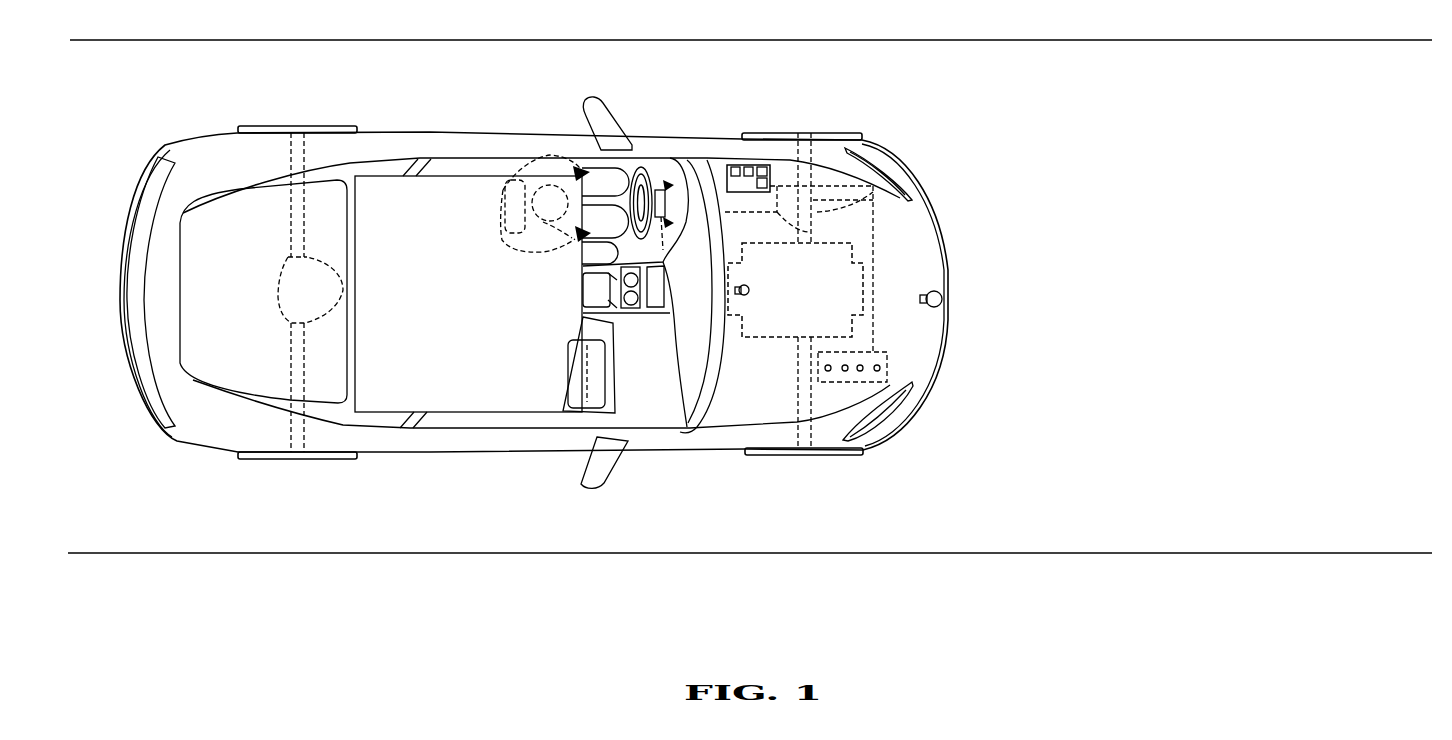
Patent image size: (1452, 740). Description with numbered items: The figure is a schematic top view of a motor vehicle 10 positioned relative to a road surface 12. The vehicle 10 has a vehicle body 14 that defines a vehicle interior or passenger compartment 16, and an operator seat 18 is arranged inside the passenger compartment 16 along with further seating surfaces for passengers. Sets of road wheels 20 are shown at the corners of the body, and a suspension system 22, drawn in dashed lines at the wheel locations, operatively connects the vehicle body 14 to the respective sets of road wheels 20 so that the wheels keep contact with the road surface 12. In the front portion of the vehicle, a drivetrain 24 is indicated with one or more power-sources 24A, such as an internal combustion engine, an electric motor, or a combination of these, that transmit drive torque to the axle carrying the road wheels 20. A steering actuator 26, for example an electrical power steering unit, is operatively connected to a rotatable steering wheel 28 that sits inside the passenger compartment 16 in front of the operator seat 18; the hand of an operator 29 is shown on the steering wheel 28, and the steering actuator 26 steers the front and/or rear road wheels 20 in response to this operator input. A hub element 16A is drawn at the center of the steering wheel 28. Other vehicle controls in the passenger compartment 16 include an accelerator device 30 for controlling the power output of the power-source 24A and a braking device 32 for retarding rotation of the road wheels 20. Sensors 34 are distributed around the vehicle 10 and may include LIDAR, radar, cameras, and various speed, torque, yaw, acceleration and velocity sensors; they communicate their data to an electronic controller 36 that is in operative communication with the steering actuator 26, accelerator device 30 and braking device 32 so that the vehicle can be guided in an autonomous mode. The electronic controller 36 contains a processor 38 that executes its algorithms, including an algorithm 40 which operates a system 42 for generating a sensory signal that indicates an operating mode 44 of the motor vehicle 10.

The motor vehicle 10 is at (438, 106).
The road surface 12 is at (1285, 84).
The vehicle body 14 is at (380, 126).
The passenger compartment 16 is at (486, 204).
The airbag hub 16A is at (668, 180).
The operator seat 18 is at (513, 250).
The road wheels 20 is at (277, 126).
The suspension system 22 is at (309, 433).
The drivetrain 24 is at (860, 326).
The power-source 24A is at (821, 301).
The steering actuator 26 is at (908, 173).
The steering wheel 28 is at (640, 166).
The operator 29 is at (585, 190).
The accelerator device 30 is at (633, 300).
The braking device 32 is at (659, 175).
The sensors 34 is at (942, 300).
The electronic controller 36 is at (770, 168).
The processor 38 is at (734, 165).
The algorithm 40 is at (748, 165).
The system 42 is at (763, 165).
The operating mode 44 is at (812, 134).